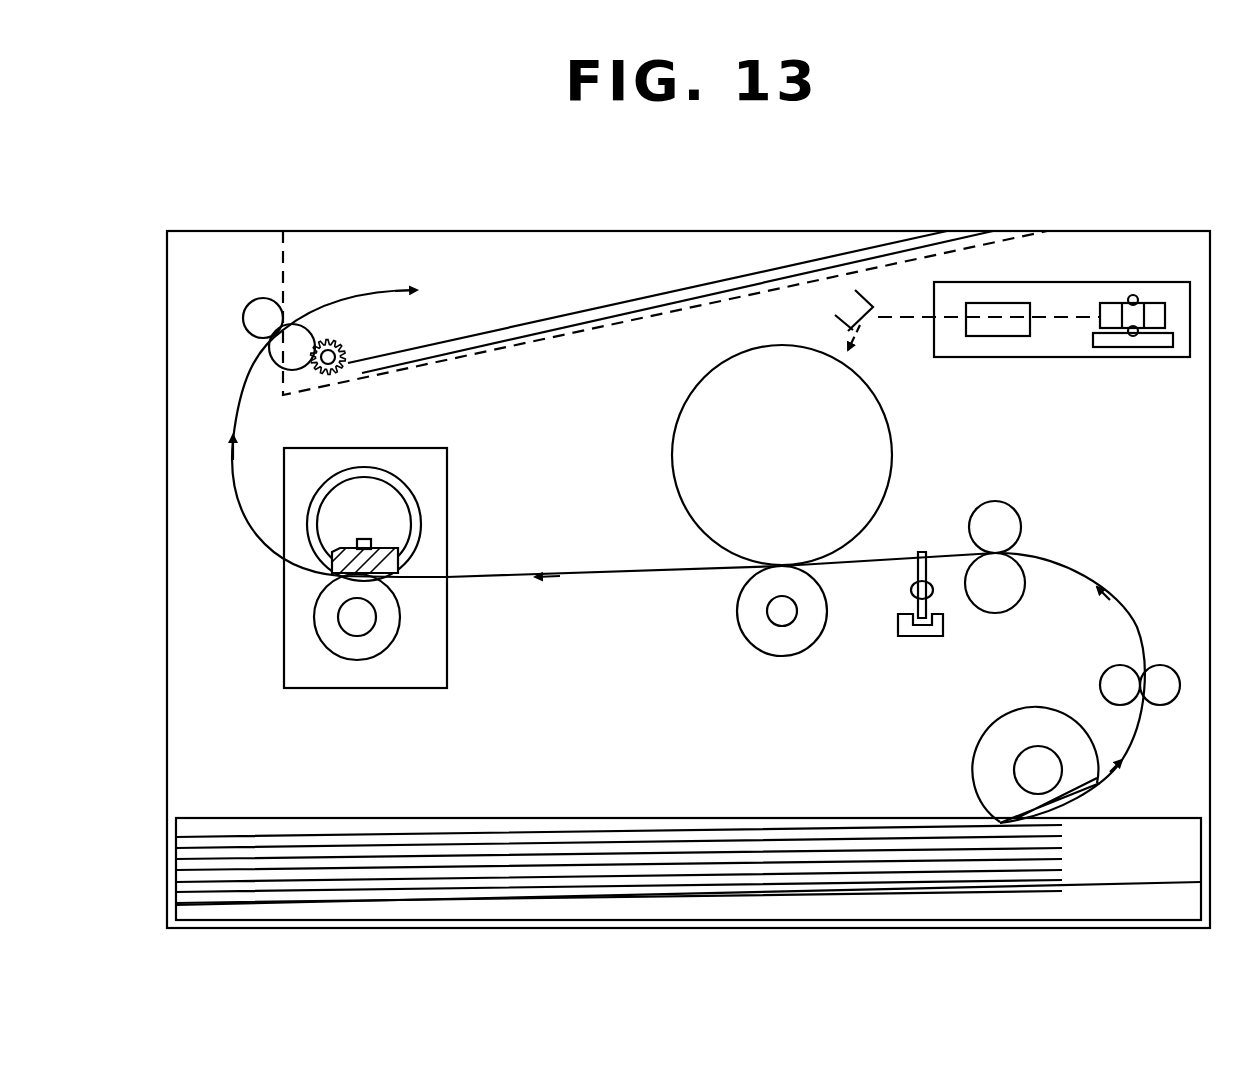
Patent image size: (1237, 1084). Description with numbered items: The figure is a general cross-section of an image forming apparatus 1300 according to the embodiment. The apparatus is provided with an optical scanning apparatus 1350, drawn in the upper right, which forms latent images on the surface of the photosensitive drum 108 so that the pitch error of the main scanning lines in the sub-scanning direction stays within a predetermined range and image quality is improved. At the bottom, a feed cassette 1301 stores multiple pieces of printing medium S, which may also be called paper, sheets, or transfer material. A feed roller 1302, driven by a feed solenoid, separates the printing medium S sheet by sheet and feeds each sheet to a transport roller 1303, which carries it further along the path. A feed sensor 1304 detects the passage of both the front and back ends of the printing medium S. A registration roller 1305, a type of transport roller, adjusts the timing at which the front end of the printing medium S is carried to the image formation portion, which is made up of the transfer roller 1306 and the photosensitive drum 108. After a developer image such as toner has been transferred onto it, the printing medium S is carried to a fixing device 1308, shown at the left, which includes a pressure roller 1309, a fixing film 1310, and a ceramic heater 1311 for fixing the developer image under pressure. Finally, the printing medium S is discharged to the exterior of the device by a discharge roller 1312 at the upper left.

The image forming apparatus 1300 is at (1125, 186).
The photosensitive drum 108 is at (892, 438).
The feed cassette 1301 is at (1170, 818).
The feed roller 1302 is at (1037, 708).
The transport roller 1303 is at (1160, 664).
The feed sensor 1304 is at (921, 640).
The registration roller 1305 is at (994, 500).
The transfer roller 1306 is at (784, 657).
The fixing device 1308 is at (284, 670).
The pressure roller 1309 is at (357, 661).
The fixing film 1310 is at (408, 483).
The ceramic heater 1311 is at (393, 548).
The discharge roller 1312 is at (258, 300).
The optical scanning apparatus 1350 is at (1158, 358).
The printing medium S is at (872, 822).